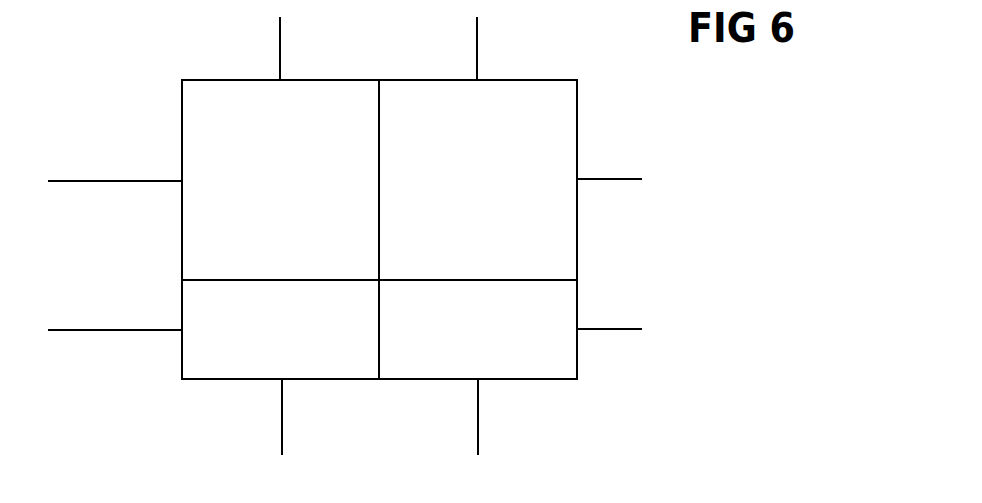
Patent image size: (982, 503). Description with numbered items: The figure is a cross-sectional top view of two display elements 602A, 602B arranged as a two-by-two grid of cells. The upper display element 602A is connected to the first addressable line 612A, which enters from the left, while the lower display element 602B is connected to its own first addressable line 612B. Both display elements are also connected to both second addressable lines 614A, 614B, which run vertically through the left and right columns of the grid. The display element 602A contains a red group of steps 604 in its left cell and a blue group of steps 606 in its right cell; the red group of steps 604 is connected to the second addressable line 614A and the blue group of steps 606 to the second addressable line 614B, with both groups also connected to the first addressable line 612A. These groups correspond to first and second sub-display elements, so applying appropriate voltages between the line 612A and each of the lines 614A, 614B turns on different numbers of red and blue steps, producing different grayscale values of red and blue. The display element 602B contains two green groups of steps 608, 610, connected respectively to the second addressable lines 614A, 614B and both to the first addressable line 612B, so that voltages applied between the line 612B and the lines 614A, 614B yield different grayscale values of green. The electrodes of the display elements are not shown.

The display element 602A is at (642, 80).
The display element 602B is at (642, 279).
The red group of steps 604 is at (299, 203).
The blue group of steps 606 is at (496, 203).
The green group of steps 608 is at (299, 352).
The green group of steps 610 is at (496, 352).
The first addressable line 612A is at (107, 181).
The first addressable line 612B is at (135, 330).
The second addressable line 614A is at (280, 48).
The second addressable line 614B is at (477, 48).